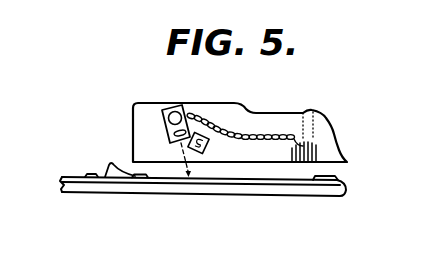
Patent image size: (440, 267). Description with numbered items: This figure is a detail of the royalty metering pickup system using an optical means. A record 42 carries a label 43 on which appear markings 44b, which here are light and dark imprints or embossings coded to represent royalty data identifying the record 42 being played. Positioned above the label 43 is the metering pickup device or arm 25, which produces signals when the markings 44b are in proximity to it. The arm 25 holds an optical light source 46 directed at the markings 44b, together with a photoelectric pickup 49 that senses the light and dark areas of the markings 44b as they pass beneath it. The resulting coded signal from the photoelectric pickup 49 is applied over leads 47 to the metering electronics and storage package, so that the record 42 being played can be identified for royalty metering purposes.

The metering pickup device 25 is at (209, 98).
The record 42 is at (73, 192).
The label 43 is at (74, 177).
The markings 44b is at (110, 160).
The optical light source 46 is at (166, 107).
The leads 47 is at (297, 146).
The photoelectric pickup 49 is at (203, 155).